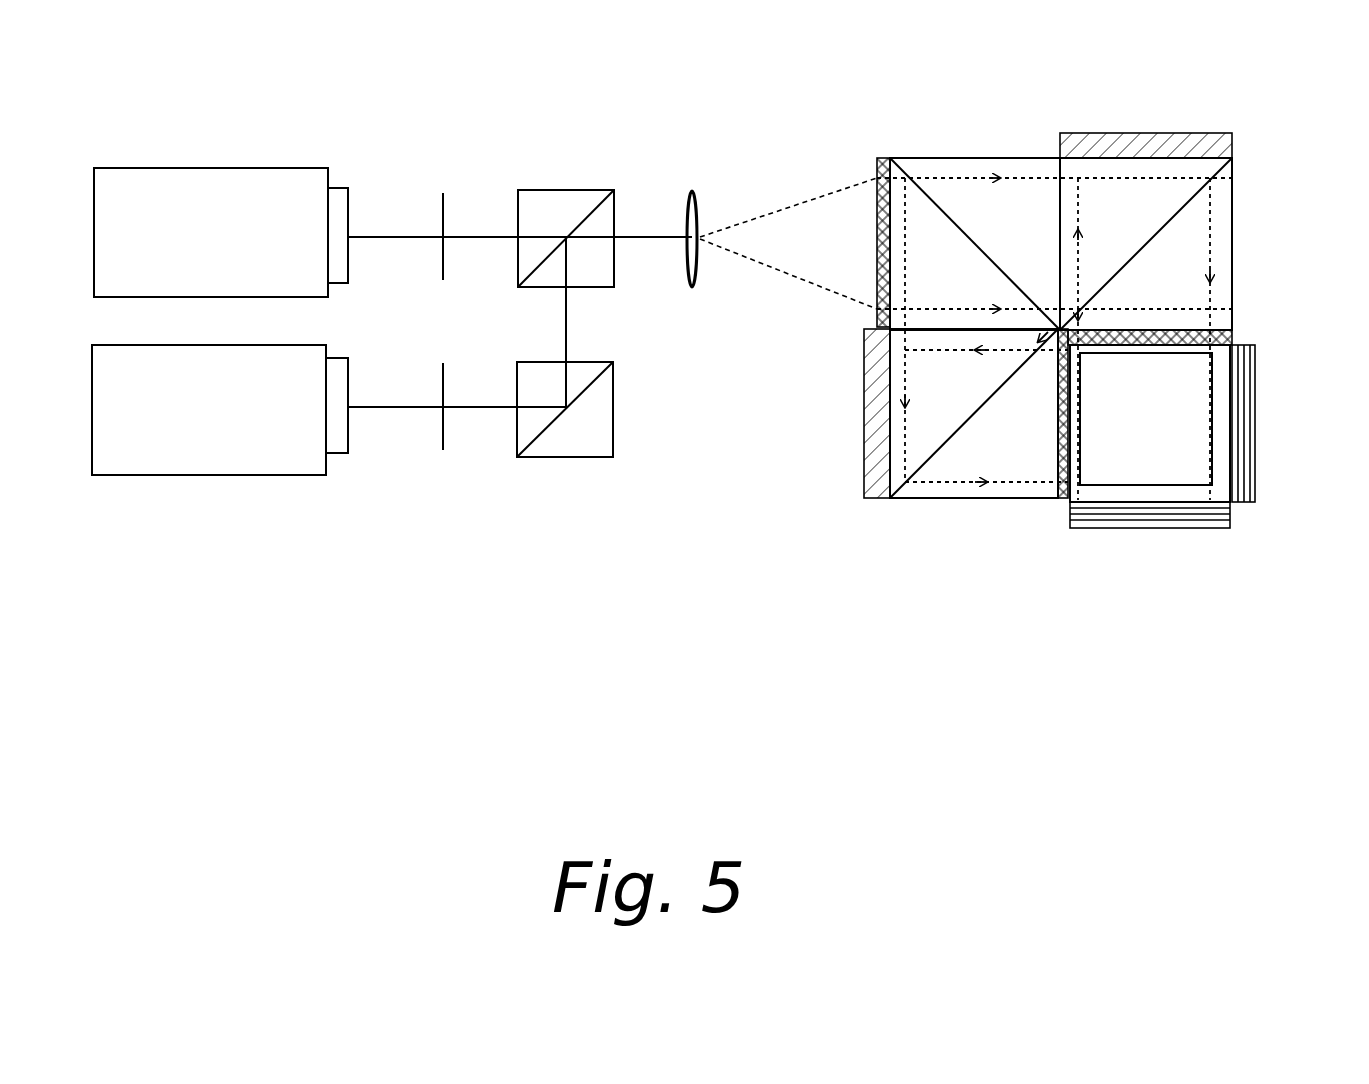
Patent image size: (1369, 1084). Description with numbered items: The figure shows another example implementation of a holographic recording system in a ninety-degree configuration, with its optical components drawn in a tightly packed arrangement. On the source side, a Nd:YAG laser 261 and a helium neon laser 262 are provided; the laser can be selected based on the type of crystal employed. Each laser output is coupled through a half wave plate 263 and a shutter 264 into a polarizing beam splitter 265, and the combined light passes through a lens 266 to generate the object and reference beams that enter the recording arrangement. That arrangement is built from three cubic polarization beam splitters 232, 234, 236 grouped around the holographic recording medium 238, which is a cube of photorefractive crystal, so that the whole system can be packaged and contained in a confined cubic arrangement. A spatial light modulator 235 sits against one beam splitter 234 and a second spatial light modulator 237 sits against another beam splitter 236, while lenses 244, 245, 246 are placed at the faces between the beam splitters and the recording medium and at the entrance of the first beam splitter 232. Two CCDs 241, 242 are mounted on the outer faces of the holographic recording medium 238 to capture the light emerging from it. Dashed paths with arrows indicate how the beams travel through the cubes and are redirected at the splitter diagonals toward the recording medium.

The Nd:YAG laser 261 is at (221, 232).
The helium neon laser 262 is at (220, 410).
The half wave plate 263 is at (336, 186).
The shutter 264 is at (440, 176).
The polarizing beam splitter 265 is at (518, 284).
The lens 266 is at (690, 182).
The lens 246 is at (881, 158).
The polarization beam splitter 232 is at (925, 158).
The spatial light modulator 235 is at (1130, 133).
The polarization beam splitter 234 is at (1232, 237).
The lens 244 is at (1232, 335).
The spatial light modulator 237 is at (864, 440).
The polarization beam splitter 236 is at (905, 498).
The lens 245 is at (1062, 498).
The holographic recording medium 238 is at (1150, 423).
The CCD 241 is at (1255, 397).
The CCD 242 is at (1140, 528).